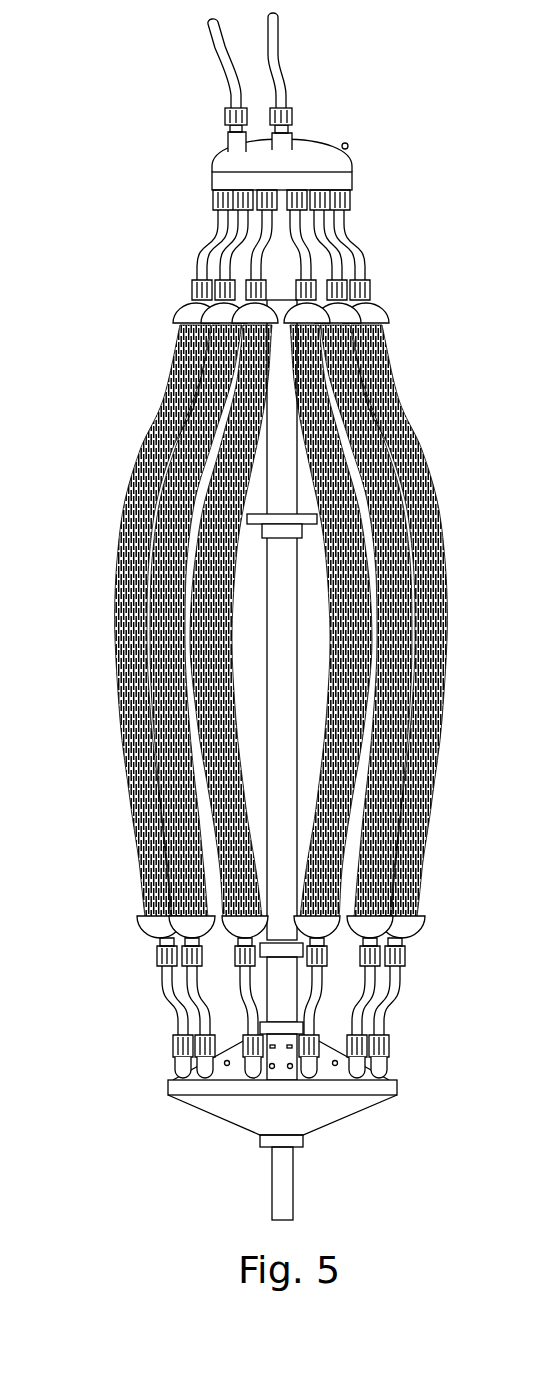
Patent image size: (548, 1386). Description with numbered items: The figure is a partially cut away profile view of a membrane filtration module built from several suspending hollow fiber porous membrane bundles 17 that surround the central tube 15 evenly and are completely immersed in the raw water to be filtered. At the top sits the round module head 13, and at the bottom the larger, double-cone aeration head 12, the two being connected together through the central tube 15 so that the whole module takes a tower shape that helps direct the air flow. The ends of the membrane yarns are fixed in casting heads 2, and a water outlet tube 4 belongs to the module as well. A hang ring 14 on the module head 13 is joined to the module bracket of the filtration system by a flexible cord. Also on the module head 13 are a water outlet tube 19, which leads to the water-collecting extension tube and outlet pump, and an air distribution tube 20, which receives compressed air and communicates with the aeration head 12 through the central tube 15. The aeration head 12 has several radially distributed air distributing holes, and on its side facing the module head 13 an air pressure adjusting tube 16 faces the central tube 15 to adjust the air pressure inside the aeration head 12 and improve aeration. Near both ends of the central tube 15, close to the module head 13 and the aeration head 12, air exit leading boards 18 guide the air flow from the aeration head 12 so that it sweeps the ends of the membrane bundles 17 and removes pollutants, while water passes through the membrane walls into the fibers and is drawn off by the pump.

The casting head 2 is at (367, 313).
The water outlet tube 4 is at (203, 262).
The aeration head 12 is at (308, 1110).
The module head 13 is at (323, 180).
The hang ring 14 is at (348, 143).
The central tube 15 is at (288, 975).
The air pressure adjusting tube 16 is at (282, 1183).
The hollow fiber porous membrane bundle 17 is at (115, 570).
The air exit leading board 18 is at (313, 522).
The water outlet tube 19 is at (220, 47).
The air distribution tube 20 is at (277, 52).